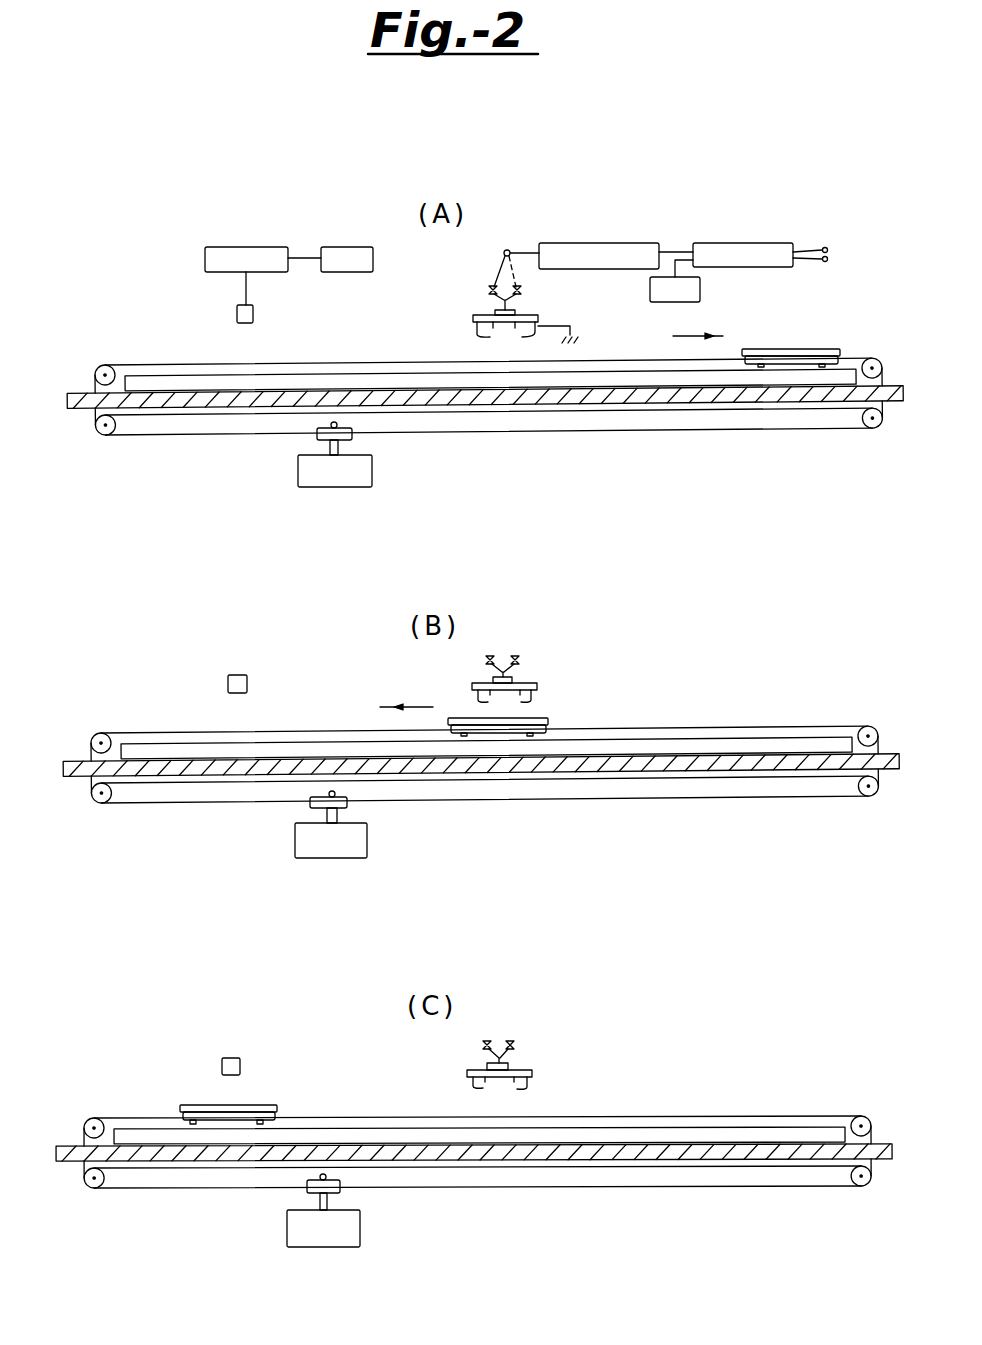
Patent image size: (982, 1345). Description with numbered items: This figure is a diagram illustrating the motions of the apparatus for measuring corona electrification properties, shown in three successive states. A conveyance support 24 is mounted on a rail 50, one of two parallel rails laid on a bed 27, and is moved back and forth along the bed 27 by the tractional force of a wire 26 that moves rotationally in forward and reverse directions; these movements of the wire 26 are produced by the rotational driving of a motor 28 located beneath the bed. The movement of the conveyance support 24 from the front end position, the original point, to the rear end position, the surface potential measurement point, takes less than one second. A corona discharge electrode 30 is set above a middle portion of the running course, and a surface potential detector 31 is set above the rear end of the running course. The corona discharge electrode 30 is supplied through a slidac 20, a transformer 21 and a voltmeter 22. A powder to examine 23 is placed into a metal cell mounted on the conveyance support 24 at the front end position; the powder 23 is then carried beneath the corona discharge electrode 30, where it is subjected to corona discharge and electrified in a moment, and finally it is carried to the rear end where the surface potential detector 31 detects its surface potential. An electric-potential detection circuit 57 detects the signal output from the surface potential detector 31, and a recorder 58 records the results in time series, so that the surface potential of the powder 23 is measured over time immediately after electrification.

The slidac 20 is at (740, 250).
The transformer 21 is at (603, 251).
The voltmeter 22 is at (690, 293).
The powder to examine 23 is at (782, 349).
The conveyance support 24 is at (831, 349).
The wire 26 is at (200, 363).
The bed 27 is at (283, 398).
The motor 28 is at (360, 476).
The corona discharge electrode 30 is at (485, 312).
The surface potential detector 31 is at (237, 308).
The rail 50 is at (349, 380).
The electric-potential detection circuit 57 is at (247, 257).
The recorder 58 is at (345, 253).